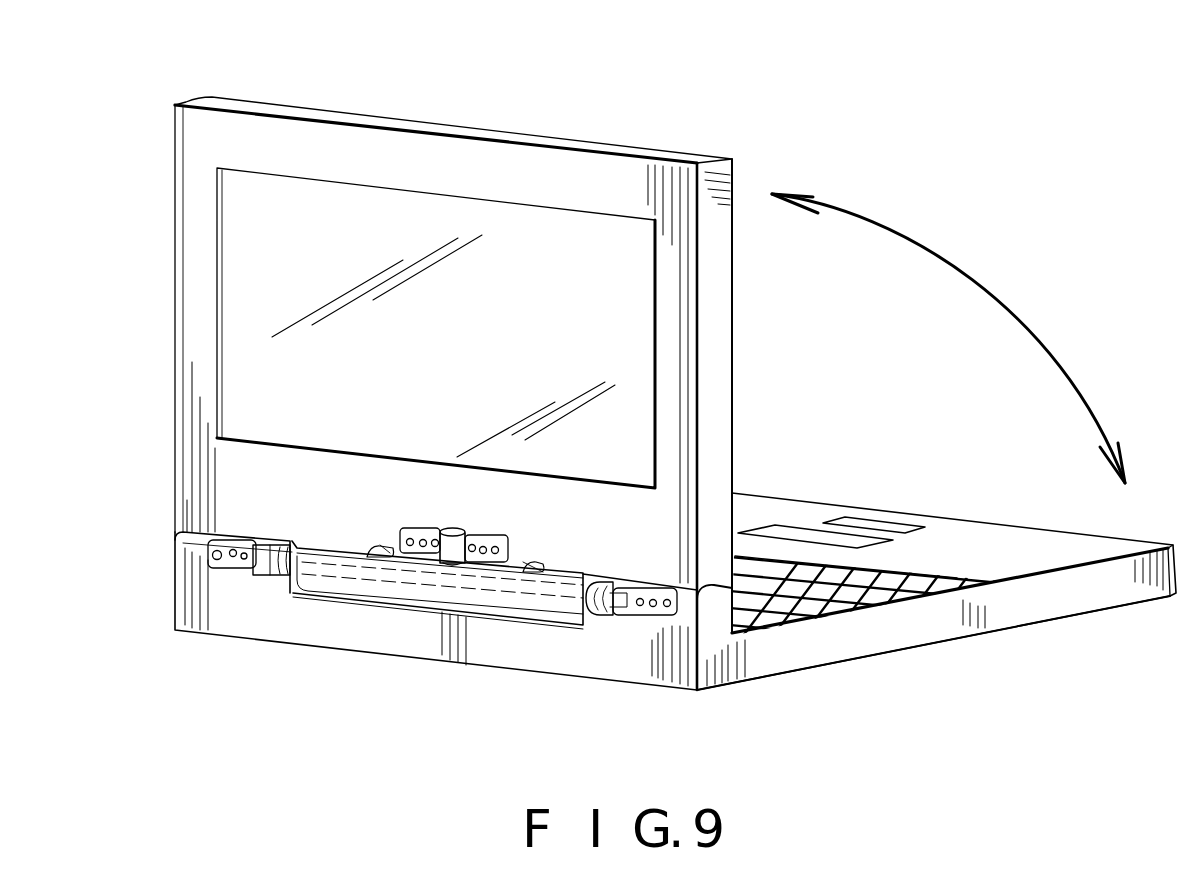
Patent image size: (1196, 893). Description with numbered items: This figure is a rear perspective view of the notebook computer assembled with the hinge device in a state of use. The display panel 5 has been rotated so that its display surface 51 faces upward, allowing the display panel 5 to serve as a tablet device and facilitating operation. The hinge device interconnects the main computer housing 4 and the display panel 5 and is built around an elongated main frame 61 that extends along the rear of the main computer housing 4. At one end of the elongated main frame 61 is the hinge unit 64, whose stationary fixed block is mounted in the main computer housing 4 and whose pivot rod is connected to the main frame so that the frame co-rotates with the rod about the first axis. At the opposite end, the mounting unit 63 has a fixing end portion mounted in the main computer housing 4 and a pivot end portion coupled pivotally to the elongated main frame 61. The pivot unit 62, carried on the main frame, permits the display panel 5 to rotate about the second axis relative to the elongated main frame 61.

The main computer housing 4 is at (1028, 608).
The display panel 5 is at (587, 175).
The display surface 51 is at (248, 312).
The elongated main frame 61 is at (547, 595).
The pivot unit 62 is at (412, 515).
The mounting unit 63 is at (643, 624).
The hinge unit 64 is at (229, 591).